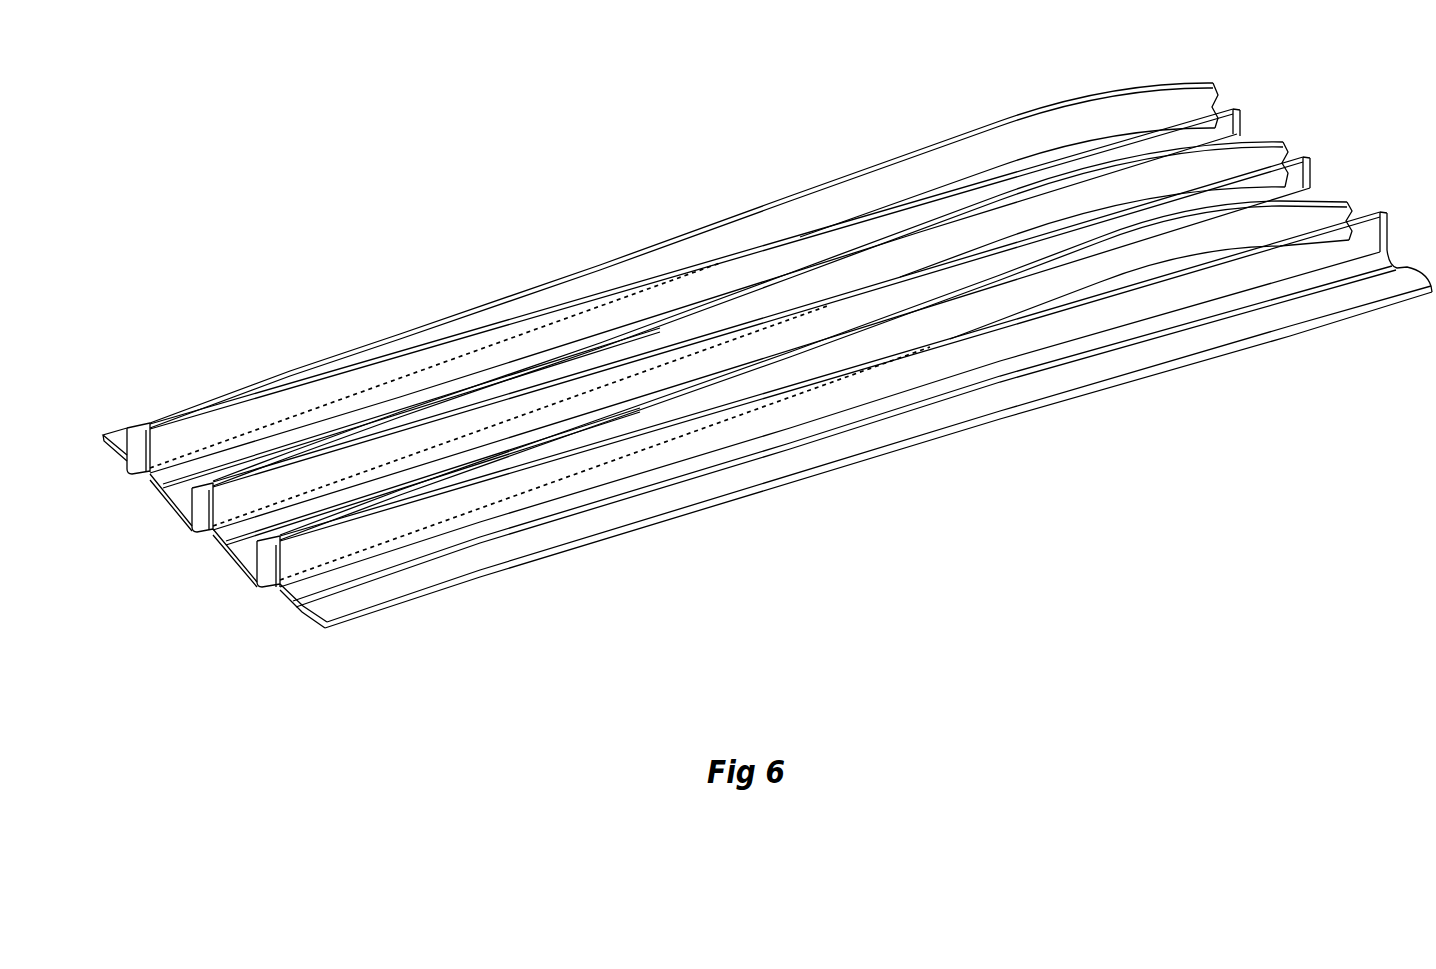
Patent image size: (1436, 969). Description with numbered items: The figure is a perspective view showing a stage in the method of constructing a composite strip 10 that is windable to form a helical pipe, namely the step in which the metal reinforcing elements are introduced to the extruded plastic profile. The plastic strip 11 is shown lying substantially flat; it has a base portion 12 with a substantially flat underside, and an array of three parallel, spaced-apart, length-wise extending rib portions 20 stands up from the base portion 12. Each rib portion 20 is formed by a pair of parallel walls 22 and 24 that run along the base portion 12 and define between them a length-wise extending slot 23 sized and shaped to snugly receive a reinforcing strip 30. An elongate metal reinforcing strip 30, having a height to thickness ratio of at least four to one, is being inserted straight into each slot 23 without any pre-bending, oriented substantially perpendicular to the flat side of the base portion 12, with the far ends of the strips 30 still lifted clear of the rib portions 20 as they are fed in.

The composite strip 10 is at (212, 607).
The plastic strip 11 is at (1358, 292).
The base portion 12 is at (120, 442).
The rib portion 20 is at (178, 400).
The wall 22 is at (139, 418).
The slot 23 is at (188, 402).
The wall 24 is at (166, 441).
The reinforcing strip 30 is at (1020, 138).